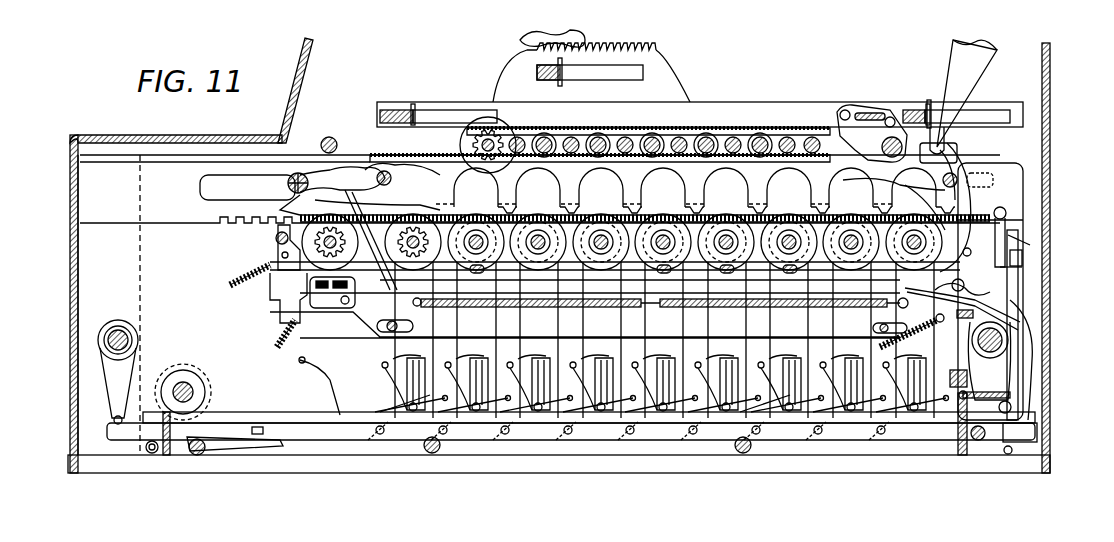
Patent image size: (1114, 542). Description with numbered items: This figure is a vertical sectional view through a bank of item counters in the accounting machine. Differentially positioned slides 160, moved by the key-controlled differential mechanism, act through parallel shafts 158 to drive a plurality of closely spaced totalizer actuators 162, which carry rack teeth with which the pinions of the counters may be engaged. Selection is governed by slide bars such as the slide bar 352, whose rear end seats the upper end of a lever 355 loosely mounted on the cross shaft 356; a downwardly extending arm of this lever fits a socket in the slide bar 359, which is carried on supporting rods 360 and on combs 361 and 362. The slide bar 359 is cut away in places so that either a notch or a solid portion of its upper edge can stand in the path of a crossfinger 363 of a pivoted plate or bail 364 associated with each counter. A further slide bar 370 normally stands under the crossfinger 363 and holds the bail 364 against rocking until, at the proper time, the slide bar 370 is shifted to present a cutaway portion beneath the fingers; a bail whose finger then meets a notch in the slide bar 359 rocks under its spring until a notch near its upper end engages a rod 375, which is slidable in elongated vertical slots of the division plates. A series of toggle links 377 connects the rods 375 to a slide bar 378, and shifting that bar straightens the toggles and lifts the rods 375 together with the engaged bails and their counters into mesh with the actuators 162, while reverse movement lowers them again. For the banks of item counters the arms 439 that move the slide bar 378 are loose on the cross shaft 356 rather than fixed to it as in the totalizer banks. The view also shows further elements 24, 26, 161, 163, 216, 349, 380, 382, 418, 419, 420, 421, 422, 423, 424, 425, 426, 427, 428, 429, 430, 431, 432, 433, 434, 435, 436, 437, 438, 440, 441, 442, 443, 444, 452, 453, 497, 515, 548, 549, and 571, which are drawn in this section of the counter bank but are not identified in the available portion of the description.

The base 24 is at (324, 315).
The housing wall 26 is at (70, 250).
The parallel shafts 158 is at (625, 135).
The slides 160 is at (590, 80).
The cover 161 is at (522, 38).
The totalizer actuators 162 is at (540, 189).
The rack bar 163 is at (668, 130).
The shaft 216 is at (296, 175).
The carriage plate 349 is at (722, 125).
The slide bar 352 is at (1025, 185).
The lever 355 is at (1008, 225).
The cross shaft 356 is at (1010, 340).
The slide bar 359 is at (258, 412).
The supporting rods 360 is at (428, 452).
The comb 361 is at (158, 453).
The comb 362 is at (975, 442).
The crossfinger 363 is at (662, 383).
The bail 364 is at (305, 365).
The slide bar 370 is at (1040, 432).
The rod 375 is at (645, 263).
The toggle links 377 is at (643, 340).
The slide bar 378 is at (571, 432).
The bar 380 is at (205, 414).
The shaft 382 is at (183, 382).
The pawl 418 is at (771, 273).
The pin 419 is at (962, 284).
The pin 420 is at (978, 252).
The arm 421 is at (1032, 244).
The stud 422 is at (1023, 267).
The block 423 is at (1023, 257).
The arm 424 is at (1022, 325).
The spring 425 is at (639, 294).
The lever 426 is at (360, 189).
The pin 427 is at (320, 146).
The arm 428 is at (923, 201).
The lever 429 is at (960, 160).
The gear 430 is at (470, 140).
The spring 431 is at (912, 335).
The pin 432 is at (984, 315).
The wheel 433 is at (622, 247).
The bracket 434 is at (615, 264).
The spring 435 is at (290, 275).
The slot 436 is at (345, 322).
The bracket 437 is at (276, 234).
The lever 438 is at (283, 318).
The arms 439 is at (1032, 383).
The spring 440 is at (1012, 395).
The block 441 is at (1010, 370).
The lever 442 is at (255, 448).
The pin 443 is at (203, 455).
The stop 444 is at (252, 430).
The pin 452 is at (1012, 408).
The link 453 is at (616, 414).
The lever 497 is at (118, 372).
The pin 515 is at (927, 123).
The key lever 548 is at (967, 93).
The tab 549 is at (950, 145).
The lever 571 is at (872, 133).